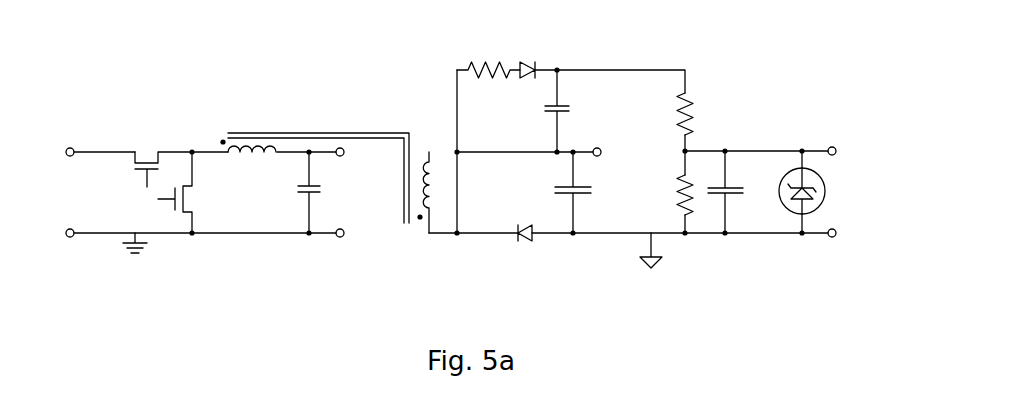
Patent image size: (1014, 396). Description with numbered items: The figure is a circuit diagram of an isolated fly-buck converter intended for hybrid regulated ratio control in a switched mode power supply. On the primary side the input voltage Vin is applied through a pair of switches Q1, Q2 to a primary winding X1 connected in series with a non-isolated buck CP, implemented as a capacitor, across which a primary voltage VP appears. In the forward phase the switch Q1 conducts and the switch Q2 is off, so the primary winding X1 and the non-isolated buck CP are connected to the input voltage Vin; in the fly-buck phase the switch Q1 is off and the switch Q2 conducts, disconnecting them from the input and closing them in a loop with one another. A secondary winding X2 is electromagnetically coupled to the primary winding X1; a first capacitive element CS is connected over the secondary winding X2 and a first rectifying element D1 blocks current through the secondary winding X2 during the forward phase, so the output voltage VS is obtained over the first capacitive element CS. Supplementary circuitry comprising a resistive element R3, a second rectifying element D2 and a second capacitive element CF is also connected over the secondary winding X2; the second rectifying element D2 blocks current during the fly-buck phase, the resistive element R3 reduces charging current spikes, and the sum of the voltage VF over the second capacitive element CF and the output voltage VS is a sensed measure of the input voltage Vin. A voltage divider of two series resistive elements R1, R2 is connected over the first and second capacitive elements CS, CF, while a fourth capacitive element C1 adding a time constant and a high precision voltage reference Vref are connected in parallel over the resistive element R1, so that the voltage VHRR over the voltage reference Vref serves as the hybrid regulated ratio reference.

The input voltage Vin is at (53, 151).
The switch Q1 is at (162, 155).
The switch Q2 is at (188, 192).
The primary winding X1 is at (252, 159).
The secondary winding X2 is at (439, 192).
The non-isolated buck CP is at (298, 192).
The primary voltage VP is at (346, 199).
The resistive element R3 is at (488, 56).
The second rectifying element D2 is at (538, 56).
The second capacitive element CF is at (542, 111).
The voltage over the second capacitive element VF is at (591, 106).
The first capacitive element CS is at (564, 192).
The output voltage VS is at (606, 197).
The first rectifying element D1 is at (524, 248).
The resistive element R2 is at (667, 114).
The resistive element R1 is at (668, 195).
The fourth capacitive element C1 is at (739, 192).
The hybrid regulated ratio reference voltage VHRR is at (834, 187).
The voltage reference Vref is at (853, 236).